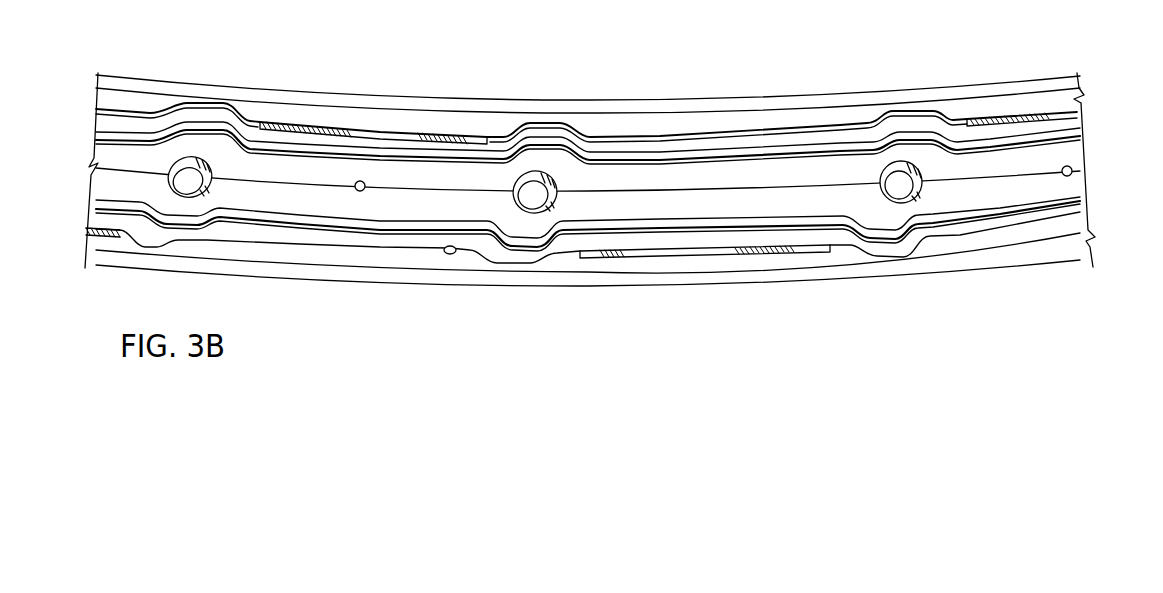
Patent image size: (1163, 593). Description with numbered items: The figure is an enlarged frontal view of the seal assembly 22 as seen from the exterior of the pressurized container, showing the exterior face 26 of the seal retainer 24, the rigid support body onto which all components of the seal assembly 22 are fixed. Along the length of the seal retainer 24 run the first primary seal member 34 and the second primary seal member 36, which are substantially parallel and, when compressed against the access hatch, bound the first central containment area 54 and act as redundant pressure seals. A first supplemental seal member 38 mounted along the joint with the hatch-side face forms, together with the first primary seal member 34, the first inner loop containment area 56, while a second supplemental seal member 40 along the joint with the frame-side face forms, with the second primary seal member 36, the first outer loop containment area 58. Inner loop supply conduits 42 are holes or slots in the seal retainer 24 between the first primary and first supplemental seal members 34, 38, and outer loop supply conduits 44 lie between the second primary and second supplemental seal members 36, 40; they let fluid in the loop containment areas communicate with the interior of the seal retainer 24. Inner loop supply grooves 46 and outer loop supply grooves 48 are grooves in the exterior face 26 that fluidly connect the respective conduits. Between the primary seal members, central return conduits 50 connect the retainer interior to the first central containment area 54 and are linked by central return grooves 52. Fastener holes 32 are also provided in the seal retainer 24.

The seal assembly 22 is at (940, 31).
The seal retainer 24 is at (1052, 300).
The exterior face 26 is at (275, 255).
The fastener holes 32 is at (168, 178).
The first primary seal member 34 is at (578, 227).
The second primary seal member 36 is at (648, 153).
The first supplemental seal member 38 is at (655, 282).
The second supplemental seal member 40 is at (748, 105).
The inner loop supply conduits 42 is at (447, 253).
The outer loop supply conduits 44 is at (277, 123).
The inner loop supply grooves 46 is at (356, 240).
The outer loop supply grooves 48 is at (147, 110).
The central return conduits 50 is at (361, 181).
The central return grooves 52 is at (433, 187).
The first central containment area 54 is at (1093, 150).
The first inner loop containment area 56 is at (84, 222).
The first outer loop containment area 58 is at (90, 90).